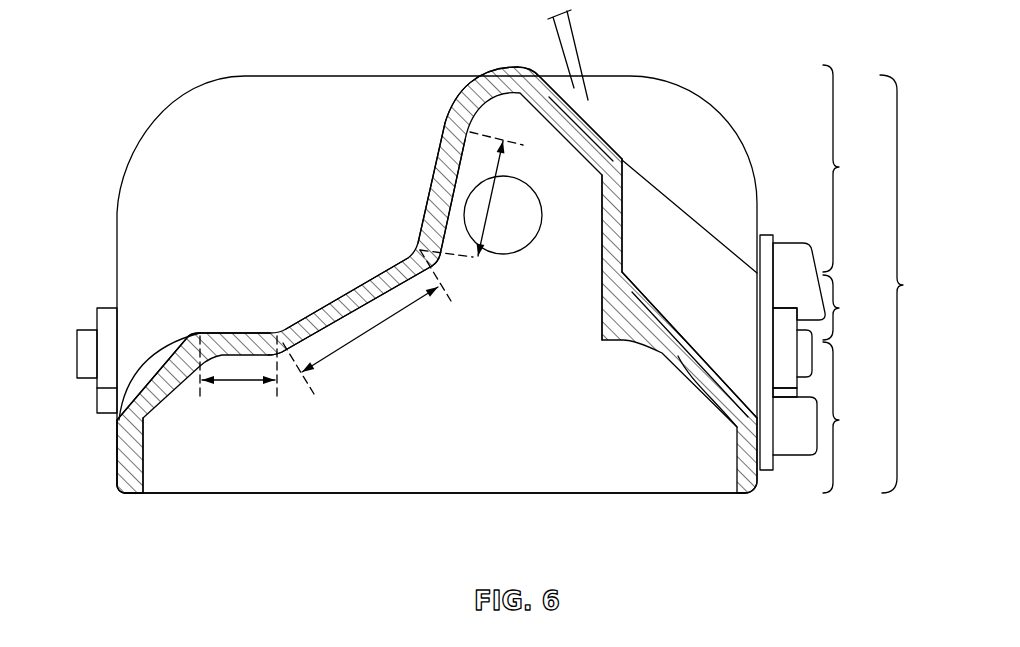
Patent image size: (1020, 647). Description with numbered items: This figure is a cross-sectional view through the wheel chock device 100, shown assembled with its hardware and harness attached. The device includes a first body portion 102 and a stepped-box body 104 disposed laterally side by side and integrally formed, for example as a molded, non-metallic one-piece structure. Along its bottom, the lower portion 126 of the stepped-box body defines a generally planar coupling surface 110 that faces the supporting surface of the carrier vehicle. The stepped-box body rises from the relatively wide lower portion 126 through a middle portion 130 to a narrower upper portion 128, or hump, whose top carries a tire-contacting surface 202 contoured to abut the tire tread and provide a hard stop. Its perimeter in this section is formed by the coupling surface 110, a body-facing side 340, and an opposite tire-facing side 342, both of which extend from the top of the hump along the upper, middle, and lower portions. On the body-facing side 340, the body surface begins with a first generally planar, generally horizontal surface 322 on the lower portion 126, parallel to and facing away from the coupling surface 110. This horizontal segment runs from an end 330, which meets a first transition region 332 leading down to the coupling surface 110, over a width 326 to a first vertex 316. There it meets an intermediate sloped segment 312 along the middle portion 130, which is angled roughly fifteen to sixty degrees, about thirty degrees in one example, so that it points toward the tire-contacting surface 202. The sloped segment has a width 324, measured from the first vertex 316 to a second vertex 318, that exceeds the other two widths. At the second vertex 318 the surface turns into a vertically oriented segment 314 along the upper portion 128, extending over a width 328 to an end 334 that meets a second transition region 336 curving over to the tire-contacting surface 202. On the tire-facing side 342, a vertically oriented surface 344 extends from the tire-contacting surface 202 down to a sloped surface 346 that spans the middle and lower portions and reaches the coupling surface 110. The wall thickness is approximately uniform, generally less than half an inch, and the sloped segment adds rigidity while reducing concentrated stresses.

The wheel chock device 100 is at (158, 42).
The first body portion 102 is at (260, 97).
The stepped-box body 104 is at (519, 279).
The coupling surface 110 is at (223, 495).
The lower portion 126 is at (831, 417).
The upper portion 128 is at (858, 168).
The middle portion 130 is at (831, 315).
The tire-contacting surface 202 is at (582, 108).
The intermediate sloped segment 312 is at (337, 297).
The vertically oriented segment 314 is at (432, 167).
The first vertex 316 is at (283, 357).
The second vertex 318 is at (450, 253).
The first generally planar, generally horizontal surface 322 is at (230, 332).
The width 324 is at (370, 337).
The width 326 is at (240, 385).
The width 328 is at (490, 207).
The end 330 is at (200, 335).
The first transition region 332 is at (120, 420).
The end 334 is at (450, 126).
The second transition region 336 is at (492, 90).
The body-facing side 340 is at (382, 265).
The tire-facing side 342 is at (624, 192).
The vertically oriented surface 344 is at (610, 240).
The sloped surface 346 is at (760, 472).